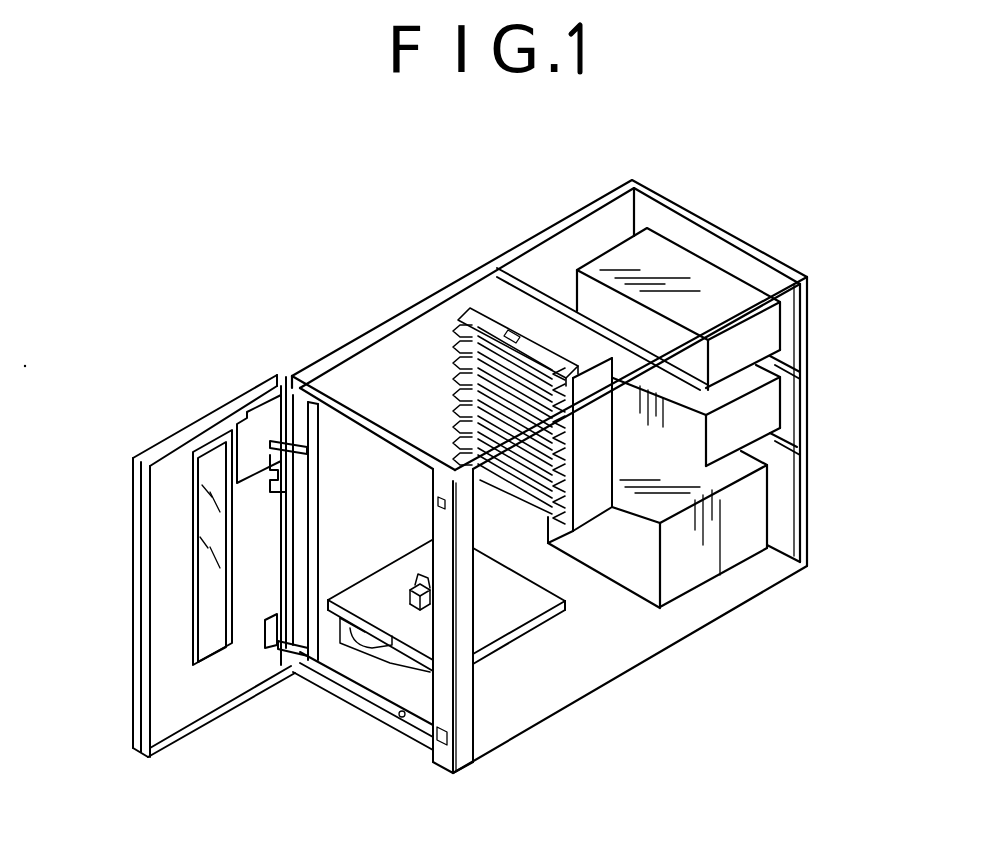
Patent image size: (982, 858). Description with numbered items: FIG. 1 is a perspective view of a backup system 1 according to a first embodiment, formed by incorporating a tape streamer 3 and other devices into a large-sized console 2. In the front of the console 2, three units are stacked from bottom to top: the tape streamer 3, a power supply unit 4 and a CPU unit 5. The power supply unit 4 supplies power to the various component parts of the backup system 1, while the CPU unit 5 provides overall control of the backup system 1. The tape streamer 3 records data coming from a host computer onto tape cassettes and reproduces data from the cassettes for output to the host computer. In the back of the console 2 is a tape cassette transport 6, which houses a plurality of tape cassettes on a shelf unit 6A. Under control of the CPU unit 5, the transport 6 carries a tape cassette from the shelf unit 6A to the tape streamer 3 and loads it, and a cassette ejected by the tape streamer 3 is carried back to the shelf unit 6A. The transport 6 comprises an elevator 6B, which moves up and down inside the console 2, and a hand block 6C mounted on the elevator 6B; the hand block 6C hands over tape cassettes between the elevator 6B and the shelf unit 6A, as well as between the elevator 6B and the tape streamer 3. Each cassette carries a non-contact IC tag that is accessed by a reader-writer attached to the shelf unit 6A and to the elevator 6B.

The backup system 1 is at (136, 270).
The console 2 is at (807, 290).
The tape streamer 3 is at (748, 515).
The power supply unit 4 is at (763, 410).
The CPU unit 5 is at (763, 337).
The tape cassette transport 6 is at (306, 330).
The shelf unit 6A is at (438, 357).
The elevator 6B is at (498, 622).
The hand block 6C is at (417, 583).